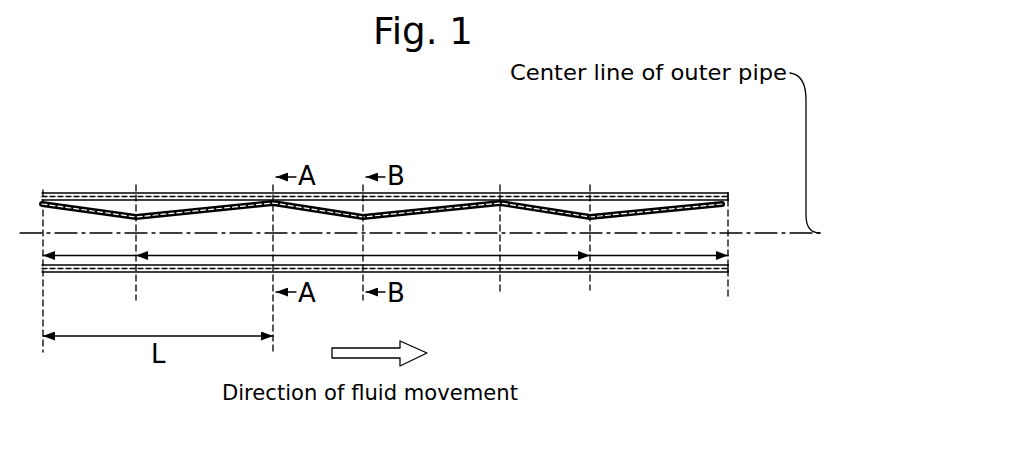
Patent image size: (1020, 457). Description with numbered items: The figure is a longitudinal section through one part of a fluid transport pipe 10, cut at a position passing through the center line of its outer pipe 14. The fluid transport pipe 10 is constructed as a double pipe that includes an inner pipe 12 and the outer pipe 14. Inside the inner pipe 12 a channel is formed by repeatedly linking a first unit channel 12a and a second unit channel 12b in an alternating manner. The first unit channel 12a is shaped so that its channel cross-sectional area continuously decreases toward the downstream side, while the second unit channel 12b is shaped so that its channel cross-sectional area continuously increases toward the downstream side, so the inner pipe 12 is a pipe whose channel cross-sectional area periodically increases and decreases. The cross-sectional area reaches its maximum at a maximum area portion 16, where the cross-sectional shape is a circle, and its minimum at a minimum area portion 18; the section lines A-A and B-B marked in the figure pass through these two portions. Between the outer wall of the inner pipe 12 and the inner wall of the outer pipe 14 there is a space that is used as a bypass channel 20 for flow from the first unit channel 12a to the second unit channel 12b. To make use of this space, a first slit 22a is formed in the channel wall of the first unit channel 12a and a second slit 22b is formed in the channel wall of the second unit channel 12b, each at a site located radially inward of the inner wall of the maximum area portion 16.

The fluid transport pipe 10 is at (688, 170).
The inner pipe 12 is at (730, 201).
The first unit channel 12a is at (83, 257).
The second unit channel 12b is at (193, 257).
The outer pipe 14 is at (632, 194).
The maximum area portion 16 is at (45, 215).
The minimum area portion 18 is at (130, 218).
The bypass channel 20 is at (138, 204).
The first slit 22a is at (102, 208).
The second slit 22b is at (192, 202).